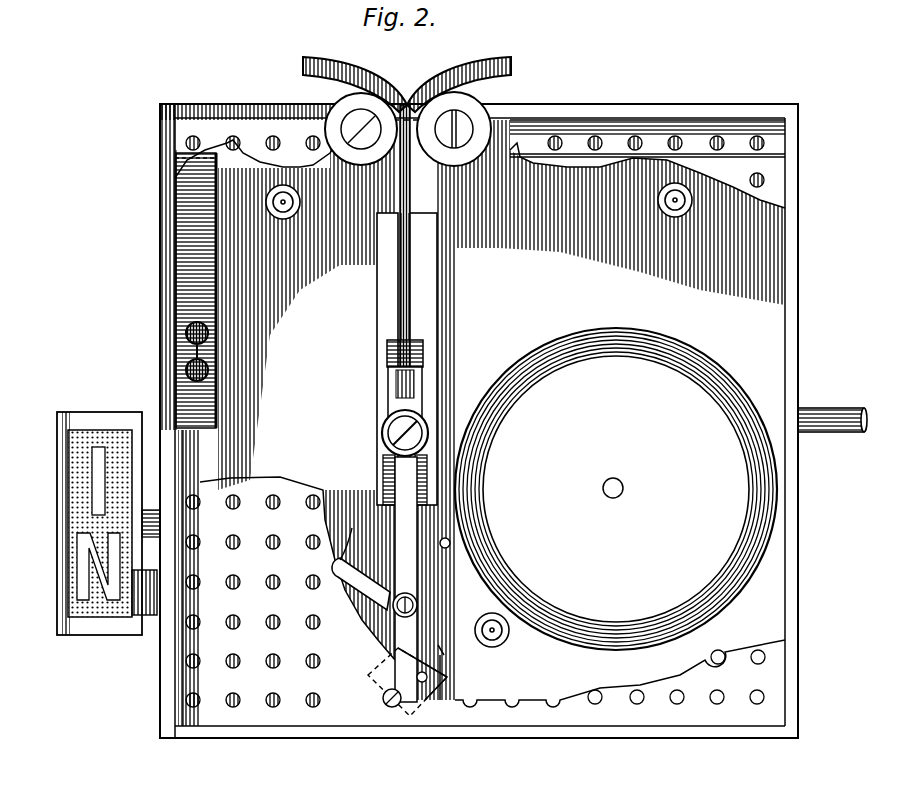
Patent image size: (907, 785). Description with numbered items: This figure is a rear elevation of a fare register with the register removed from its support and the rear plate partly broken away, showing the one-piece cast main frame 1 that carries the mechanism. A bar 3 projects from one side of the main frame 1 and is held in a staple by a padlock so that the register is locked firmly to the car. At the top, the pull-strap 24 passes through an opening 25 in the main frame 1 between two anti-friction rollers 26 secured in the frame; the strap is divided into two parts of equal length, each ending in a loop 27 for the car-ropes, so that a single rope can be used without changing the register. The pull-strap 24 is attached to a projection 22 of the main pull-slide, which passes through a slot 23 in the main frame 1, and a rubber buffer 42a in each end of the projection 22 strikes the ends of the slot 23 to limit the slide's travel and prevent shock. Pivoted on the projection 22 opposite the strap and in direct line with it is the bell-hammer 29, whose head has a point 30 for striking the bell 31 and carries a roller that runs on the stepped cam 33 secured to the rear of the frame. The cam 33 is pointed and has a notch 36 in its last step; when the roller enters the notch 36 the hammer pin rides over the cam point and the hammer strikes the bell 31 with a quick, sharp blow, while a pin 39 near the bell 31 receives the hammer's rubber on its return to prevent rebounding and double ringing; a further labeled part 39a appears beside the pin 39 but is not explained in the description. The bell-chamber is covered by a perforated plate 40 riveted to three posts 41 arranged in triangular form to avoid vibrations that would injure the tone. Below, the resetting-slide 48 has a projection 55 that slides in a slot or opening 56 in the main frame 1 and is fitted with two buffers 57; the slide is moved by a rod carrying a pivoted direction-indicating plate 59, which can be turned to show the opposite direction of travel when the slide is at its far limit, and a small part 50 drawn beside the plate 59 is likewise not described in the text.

The main frame 1 is at (808, 310).
The bar 3 is at (845, 420).
The projection 22 is at (420, 390).
The slot 23 is at (416, 255).
The pull-strap 24 is at (410, 264).
The opening 25 is at (336, 108).
The anti-friction rollers 26 is at (358, 110).
The loop 27 is at (407, 682).
The bell-hammer 29 is at (400, 552).
The point 30 is at (440, 676).
The bell 31 is at (616, 489).
The stepped cam 33 is at (372, 586).
The notch 36 is at (346, 537).
The pin 39 is at (447, 550).
The pin stop 39a is at (451, 645).
The perforated plate 40 is at (290, 592).
The posts 41 is at (290, 210).
The rubber buffer 42a is at (412, 345).
The resetting-slide 48 is at (190, 273).
The lever knob 50 is at (145, 620).
The projection 55 is at (205, 352).
The slot or opening 56 is at (148, 290).
The buffers 57 is at (208, 333).
The direction-indicating plate 59 is at (96, 624).